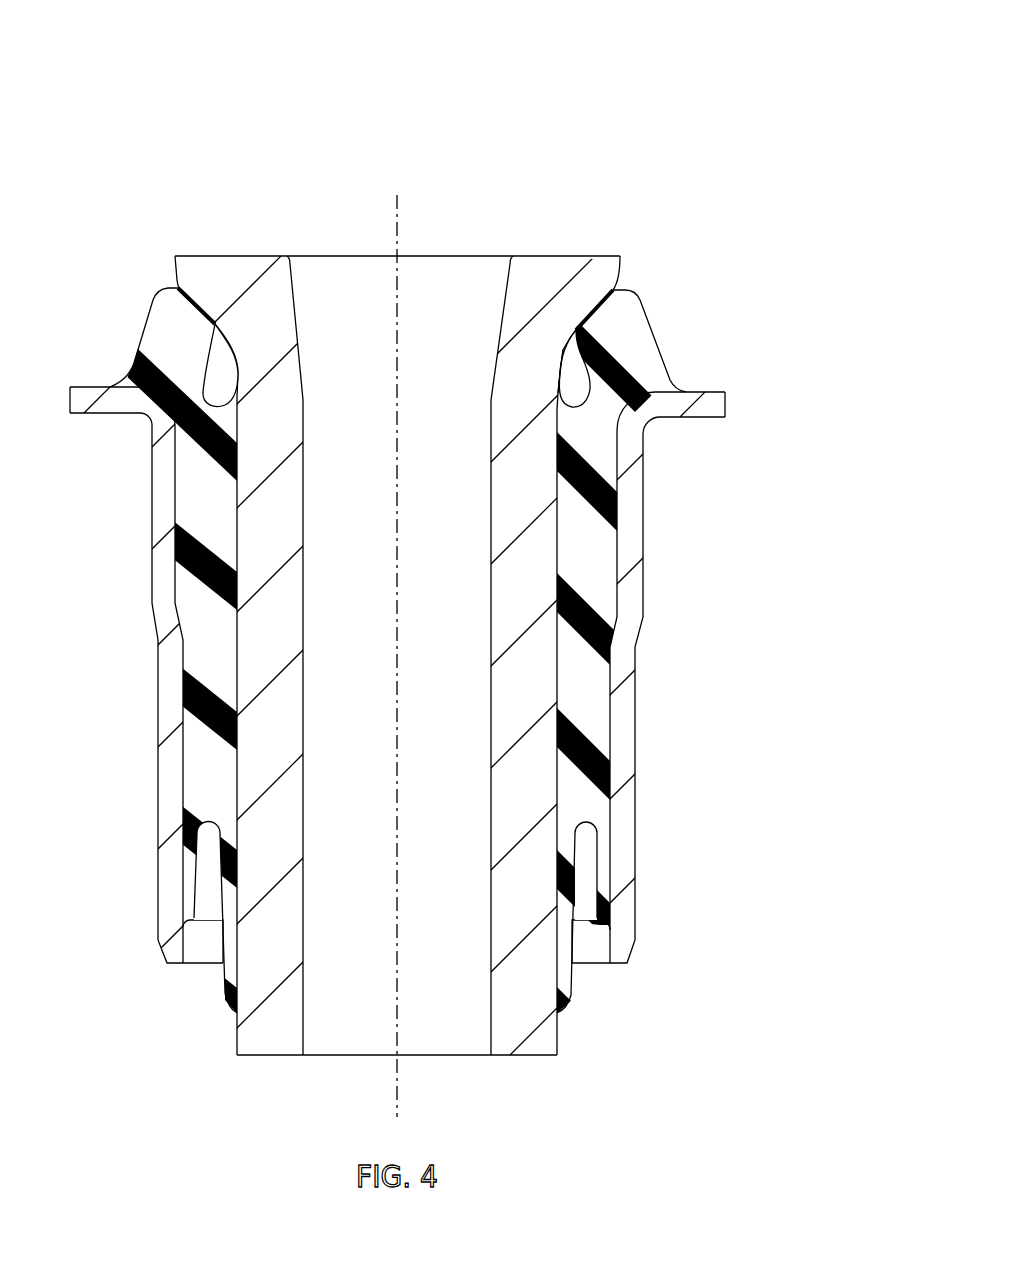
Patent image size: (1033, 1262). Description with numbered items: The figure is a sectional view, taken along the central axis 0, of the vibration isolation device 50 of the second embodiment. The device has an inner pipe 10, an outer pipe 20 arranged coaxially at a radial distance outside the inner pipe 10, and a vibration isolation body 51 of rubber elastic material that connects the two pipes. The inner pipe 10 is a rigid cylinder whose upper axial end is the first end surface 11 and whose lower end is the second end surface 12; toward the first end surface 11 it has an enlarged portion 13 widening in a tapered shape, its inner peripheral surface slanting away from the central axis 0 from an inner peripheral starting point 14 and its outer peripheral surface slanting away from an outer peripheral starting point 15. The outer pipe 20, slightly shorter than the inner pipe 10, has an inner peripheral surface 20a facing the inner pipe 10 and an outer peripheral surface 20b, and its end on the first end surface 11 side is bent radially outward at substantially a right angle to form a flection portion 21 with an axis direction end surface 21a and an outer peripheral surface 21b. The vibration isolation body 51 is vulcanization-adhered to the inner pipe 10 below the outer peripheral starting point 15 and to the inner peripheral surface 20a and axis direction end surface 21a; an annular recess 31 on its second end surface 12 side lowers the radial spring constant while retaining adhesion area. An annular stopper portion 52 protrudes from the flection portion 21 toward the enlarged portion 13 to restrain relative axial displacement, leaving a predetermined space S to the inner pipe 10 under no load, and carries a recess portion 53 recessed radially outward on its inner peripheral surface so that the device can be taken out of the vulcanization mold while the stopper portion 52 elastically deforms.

The vibration isolation device 50 is at (713, 112).
The central axis 0 is at (395, 207).
The inner pipe 10 is at (510, 713).
The first end surface 11 is at (537, 256).
The second end surface 12 is at (500, 1056).
The enlarged portion 13 is at (603, 274).
The inner peripheral starting point 14 is at (490, 403).
The outer peripheral starting point 15 is at (572, 396).
The outer pipe 20 is at (625, 712).
The inner peripheral surface 20a is at (618, 566).
The outer peripheral surface 20b is at (645, 570).
The flection portion 21 is at (675, 408).
The axis direction end surface 21a is at (712, 392).
The outer peripheral surface 21b is at (715, 420).
The annular recess 31 is at (583, 910).
The vibration isolation body 51 is at (606, 612).
The stopper portion 52 is at (640, 348).
The recess portion 53 is at (557, 382).
The space S is at (570, 368).